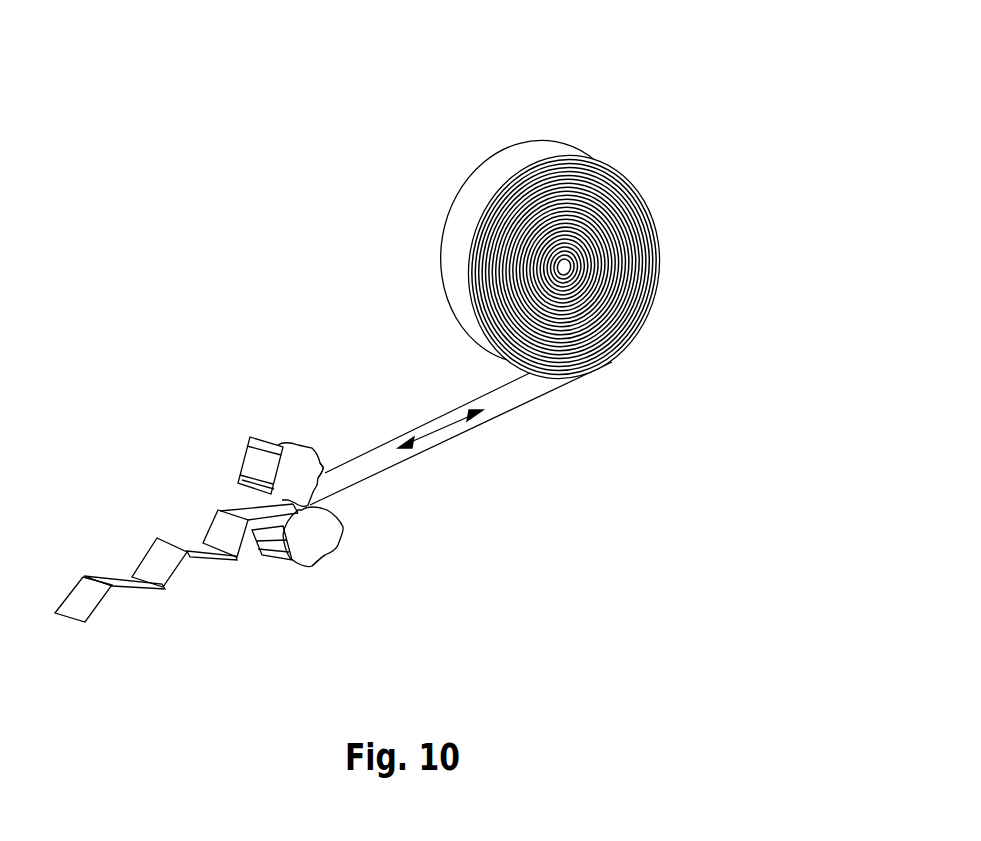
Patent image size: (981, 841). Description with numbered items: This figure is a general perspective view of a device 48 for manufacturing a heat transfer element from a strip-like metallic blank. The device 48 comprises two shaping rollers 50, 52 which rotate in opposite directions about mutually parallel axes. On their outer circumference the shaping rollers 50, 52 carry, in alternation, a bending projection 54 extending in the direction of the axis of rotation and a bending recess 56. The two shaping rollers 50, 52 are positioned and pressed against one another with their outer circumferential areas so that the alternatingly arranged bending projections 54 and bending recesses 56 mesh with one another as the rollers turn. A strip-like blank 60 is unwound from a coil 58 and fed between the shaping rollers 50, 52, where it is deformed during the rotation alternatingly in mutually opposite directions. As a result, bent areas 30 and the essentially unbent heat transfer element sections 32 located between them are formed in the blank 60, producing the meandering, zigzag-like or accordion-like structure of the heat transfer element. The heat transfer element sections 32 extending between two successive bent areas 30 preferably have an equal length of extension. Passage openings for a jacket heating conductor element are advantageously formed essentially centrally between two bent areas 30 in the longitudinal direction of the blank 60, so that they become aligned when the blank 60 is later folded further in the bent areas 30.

The bent area 30 is at (176, 573).
The heat transfer element section 32 is at (160, 567).
The device 48 is at (357, 224).
The shaping roller 50 is at (236, 458).
The shaping roller 52 is at (340, 541).
The bending projection 54 is at (262, 437).
The bending recess 56 is at (322, 470).
The coil 58 is at (600, 156).
The strip-like blank 60 is at (543, 393).